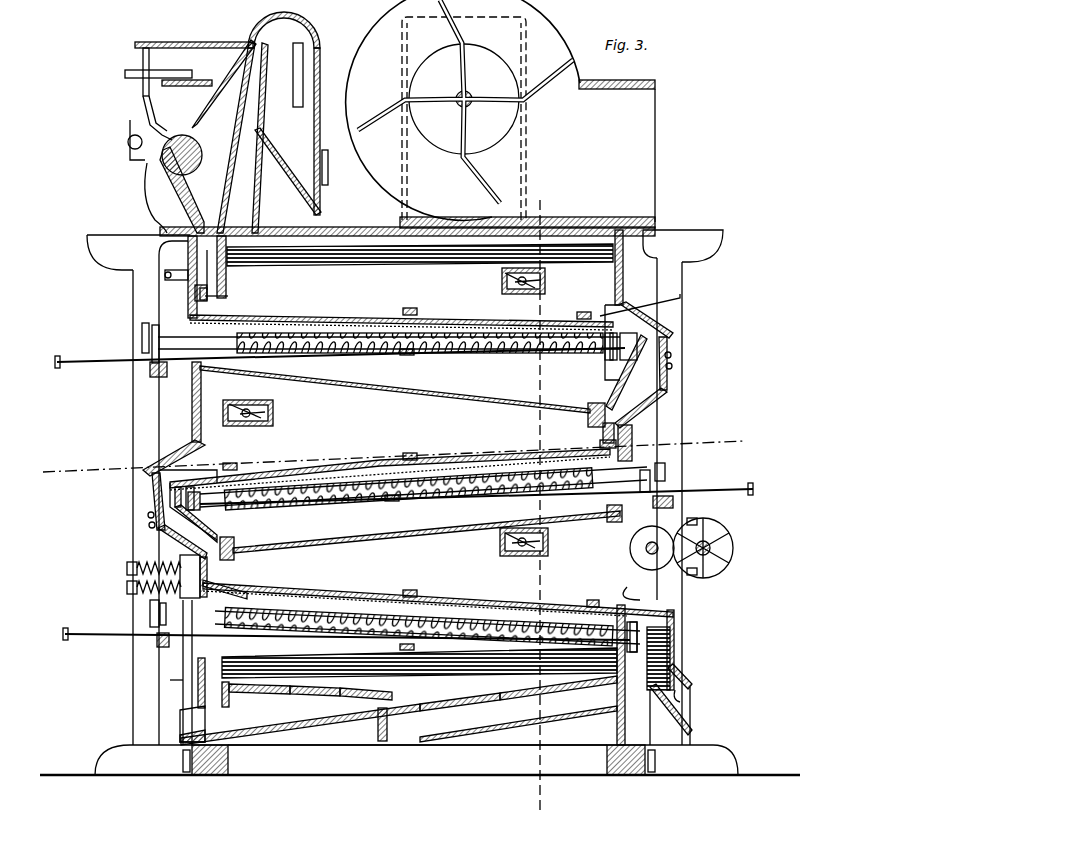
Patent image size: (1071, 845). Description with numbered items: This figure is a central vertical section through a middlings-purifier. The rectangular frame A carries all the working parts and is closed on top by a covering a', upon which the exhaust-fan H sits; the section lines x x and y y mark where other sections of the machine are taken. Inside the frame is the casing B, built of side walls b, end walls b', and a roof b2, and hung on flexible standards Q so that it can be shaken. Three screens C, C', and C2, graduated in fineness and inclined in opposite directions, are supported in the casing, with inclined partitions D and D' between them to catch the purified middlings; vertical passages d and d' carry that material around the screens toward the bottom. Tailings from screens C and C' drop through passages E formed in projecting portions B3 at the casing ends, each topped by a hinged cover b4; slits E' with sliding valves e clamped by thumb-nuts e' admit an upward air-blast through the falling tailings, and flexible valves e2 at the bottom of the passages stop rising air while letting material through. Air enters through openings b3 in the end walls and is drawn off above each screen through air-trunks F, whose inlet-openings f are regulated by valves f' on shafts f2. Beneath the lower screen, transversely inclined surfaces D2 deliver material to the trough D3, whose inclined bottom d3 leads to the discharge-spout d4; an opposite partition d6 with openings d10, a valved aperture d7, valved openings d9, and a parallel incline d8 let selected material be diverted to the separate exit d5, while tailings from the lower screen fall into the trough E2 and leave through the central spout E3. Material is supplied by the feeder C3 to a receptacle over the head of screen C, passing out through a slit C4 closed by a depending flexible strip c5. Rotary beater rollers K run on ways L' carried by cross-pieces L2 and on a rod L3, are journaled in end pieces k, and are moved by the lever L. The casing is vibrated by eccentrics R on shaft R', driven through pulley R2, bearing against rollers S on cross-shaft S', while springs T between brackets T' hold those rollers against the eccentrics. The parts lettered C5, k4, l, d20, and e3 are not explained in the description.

The rectangular frame A is at (112, 414).
The flexible standards Q is at (183, 760).
The covering a' is at (407, 221).
The exhaust-fan H is at (500, 111).
The section line y y is at (557, 494).
The section line x x is at (396, 456).
The feed hopper roller C5 is at (223, 122).
The self-regulating separating-feeder C3 is at (213, 267).
The slit C4 is at (226, 292).
The depending flexible strip c5 is at (222, 300).
The casing B is at (186, 253).
The projecting portions B3 is at (150, 490).
The passages E is at (412, 432).
The rod L3 is at (626, 371).
The horizontal openings or slits E' is at (402, 440).
The sliding valves e is at (413, 453).
The thumb-nuts e' is at (418, 441).
The inclined hinged cover b4 is at (176, 427).
The end walls b' is at (632, 271).
The roof b2 is at (420, 263).
The screen C is at (435, 311).
The rollers K is at (402, 489).
The conveyor bracket k4 is at (403, 501).
The conveyor rod l is at (404, 490).
The lever L is at (414, 499).
The end pieces k is at (393, 488).
The ways L' is at (405, 493).
The cross-pieces L2 is at (410, 513).
The inclined partition D is at (395, 389).
The vertical passages d is at (593, 413).
The inclined partition D' is at (427, 529).
The passages d' is at (239, 542).
The downwardly-opening valves e2 is at (228, 583).
The openings b3 is at (186, 330).
The screen C' is at (390, 459).
The lower screen C2 is at (458, 600).
The air-trunks F is at (390, 421).
The inlet-openings f is at (405, 411).
The valves f' is at (390, 415).
The valve shafts f2 is at (382, 409).
The side walls b is at (346, 423).
The springs T is at (168, 570).
The brackets T' is at (121, 585).
The transversely-inclined surfaces D2 is at (419, 659).
The central longitudinal trough D3 is at (404, 672).
The openings d10 is at (259, 696).
The oppositely-inclined partition d6 is at (315, 698).
The chute section d20 is at (366, 699).
The inclined bottom d3 is at (300, 724).
The valved aperture d7 is at (456, 712).
The valved openings d9 is at (542, 698).
The second incline d8 is at (518, 724).
The separate spout or exit d5 is at (417, 750).
The discharge-spout d4 is at (192, 724).
The rollers S is at (652, 548).
The cross-shaft S' is at (657, 555).
The eccentrics R is at (706, 548).
The shaft R' is at (721, 555).
The pulley R2 is at (700, 575).
The trough E2 is at (674, 660).
The end wall lip e3 is at (682, 692).
The central spout E3 is at (690, 706).